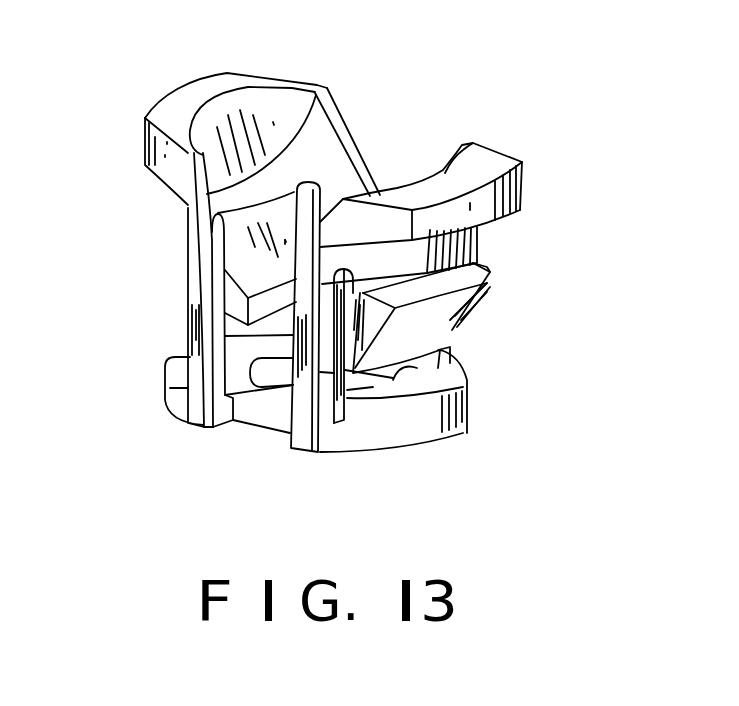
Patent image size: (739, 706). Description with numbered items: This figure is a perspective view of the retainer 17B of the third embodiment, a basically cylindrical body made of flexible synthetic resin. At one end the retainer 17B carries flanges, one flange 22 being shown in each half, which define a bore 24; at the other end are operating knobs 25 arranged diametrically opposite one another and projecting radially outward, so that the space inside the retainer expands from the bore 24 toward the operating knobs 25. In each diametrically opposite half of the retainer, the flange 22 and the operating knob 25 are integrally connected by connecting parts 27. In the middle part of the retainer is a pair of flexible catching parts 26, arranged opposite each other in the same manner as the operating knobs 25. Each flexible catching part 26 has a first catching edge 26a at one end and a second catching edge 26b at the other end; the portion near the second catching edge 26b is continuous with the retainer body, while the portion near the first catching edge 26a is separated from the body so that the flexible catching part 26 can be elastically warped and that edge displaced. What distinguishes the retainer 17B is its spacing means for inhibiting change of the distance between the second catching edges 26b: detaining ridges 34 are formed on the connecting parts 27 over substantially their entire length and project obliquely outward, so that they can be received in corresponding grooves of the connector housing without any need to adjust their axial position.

The retainer 17B is at (407, 131).
The flange 22 is at (175, 372).
The bore 24 is at (373, 393).
The operating knob 25 is at (190, 87).
The flexible catching part 26 is at (274, 212).
The first catching edge 26a is at (460, 390).
The second catching edge 26b is at (462, 288).
The connecting part 27 is at (188, 265).
The detaining ridge 34 is at (212, 297).